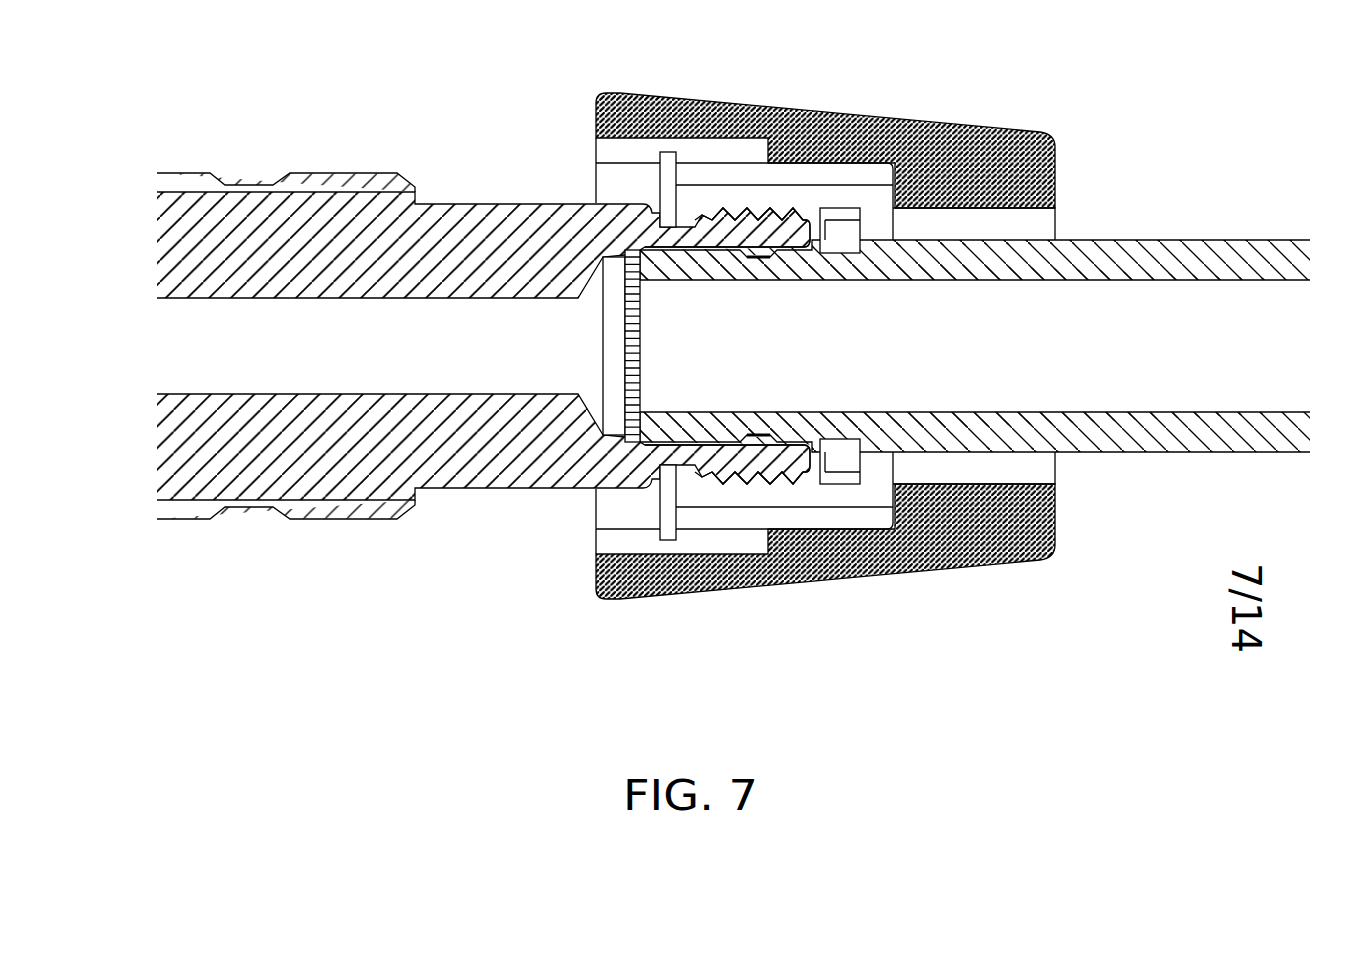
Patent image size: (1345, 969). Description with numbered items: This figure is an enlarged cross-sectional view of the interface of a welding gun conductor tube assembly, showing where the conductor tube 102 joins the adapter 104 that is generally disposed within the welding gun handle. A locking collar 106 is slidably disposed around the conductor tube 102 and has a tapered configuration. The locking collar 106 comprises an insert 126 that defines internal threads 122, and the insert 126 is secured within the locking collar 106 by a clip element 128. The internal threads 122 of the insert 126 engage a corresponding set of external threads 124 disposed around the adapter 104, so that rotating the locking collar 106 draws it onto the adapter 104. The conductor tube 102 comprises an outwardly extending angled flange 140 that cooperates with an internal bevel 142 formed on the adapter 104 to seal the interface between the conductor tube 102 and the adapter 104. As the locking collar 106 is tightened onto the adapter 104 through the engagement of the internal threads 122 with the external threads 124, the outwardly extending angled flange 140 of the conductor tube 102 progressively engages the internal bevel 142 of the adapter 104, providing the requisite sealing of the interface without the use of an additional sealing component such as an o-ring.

The conductor tube 102 is at (1133, 212).
The adapter 104 is at (470, 474).
The locking collar 106 is at (885, 212).
The internal threads 122 is at (782, 213).
The external threads 124 is at (745, 218).
The insert 126 is at (987, 130).
The clip element 128 is at (665, 183).
The outwardly extending angled flange 140 is at (812, 247).
The internal bevel 142 is at (806, 233).